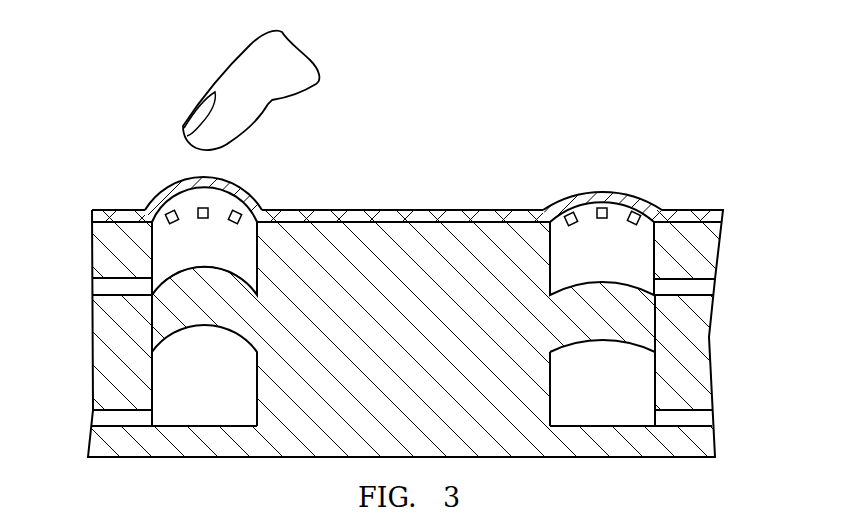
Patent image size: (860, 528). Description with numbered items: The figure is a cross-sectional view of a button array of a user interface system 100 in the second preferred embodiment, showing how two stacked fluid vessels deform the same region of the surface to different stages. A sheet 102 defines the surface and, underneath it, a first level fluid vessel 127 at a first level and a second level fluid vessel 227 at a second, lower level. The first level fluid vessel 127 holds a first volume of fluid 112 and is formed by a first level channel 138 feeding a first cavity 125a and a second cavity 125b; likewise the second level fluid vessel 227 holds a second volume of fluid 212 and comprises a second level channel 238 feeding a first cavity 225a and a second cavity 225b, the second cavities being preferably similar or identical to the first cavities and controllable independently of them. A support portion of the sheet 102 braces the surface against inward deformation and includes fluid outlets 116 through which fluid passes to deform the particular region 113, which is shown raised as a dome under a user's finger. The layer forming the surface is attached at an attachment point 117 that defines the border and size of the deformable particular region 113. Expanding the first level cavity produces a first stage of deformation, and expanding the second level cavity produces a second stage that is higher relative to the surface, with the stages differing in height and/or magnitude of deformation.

The user interface system 100 is at (98, 122).
The sheet 102 is at (72, 209).
The first volume of fluid 112 is at (233, 237).
The particular region 113 is at (238, 183).
The fluid outlets 116 is at (169, 211).
The attachment point 117 is at (148, 216).
The first cavity 125a is at (227, 258).
The second cavity 125b is at (629, 260).
The first level fluid vessel 127 is at (171, 262).
The first level channel 138 is at (107, 287).
The second volume of fluid 212 is at (222, 405).
The first cavity 225a is at (227, 390).
The second cavity 225b is at (628, 390).
The second level fluid vessel 227 is at (195, 405).
The second level channel 238 is at (107, 418).